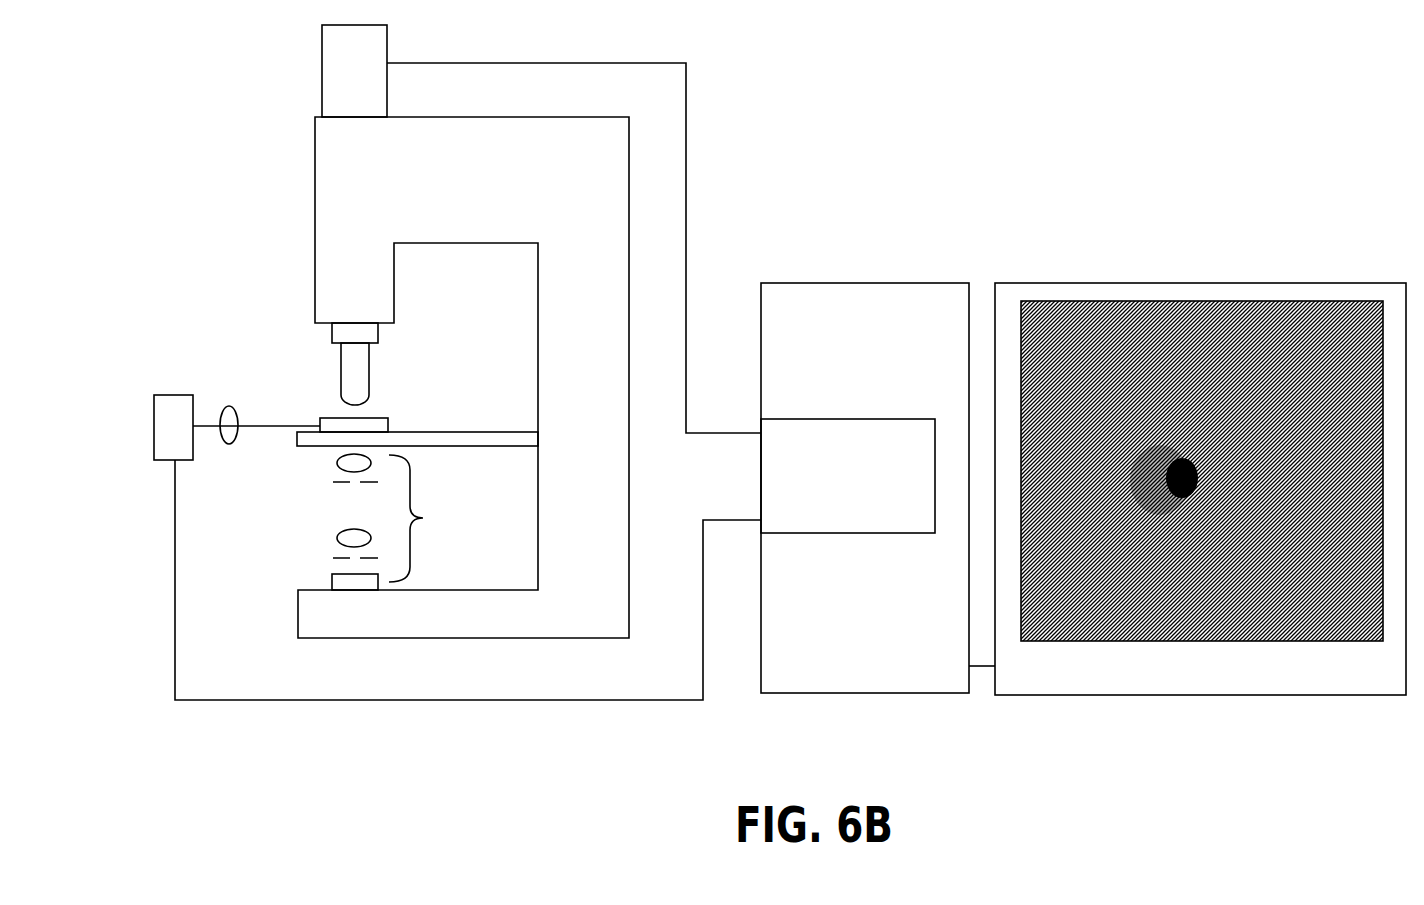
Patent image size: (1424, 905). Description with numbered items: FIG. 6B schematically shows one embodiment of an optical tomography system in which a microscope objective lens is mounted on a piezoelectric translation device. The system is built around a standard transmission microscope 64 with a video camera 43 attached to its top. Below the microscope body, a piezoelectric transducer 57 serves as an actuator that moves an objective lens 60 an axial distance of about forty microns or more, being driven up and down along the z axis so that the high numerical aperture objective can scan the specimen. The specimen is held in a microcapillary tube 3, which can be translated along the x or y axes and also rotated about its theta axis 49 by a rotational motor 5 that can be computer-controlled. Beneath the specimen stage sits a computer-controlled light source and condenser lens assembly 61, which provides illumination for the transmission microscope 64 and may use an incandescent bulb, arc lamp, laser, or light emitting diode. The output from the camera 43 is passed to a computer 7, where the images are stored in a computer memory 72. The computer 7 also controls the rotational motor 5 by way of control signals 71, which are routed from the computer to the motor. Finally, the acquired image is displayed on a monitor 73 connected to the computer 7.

The video camera 43 is at (322, 68).
The transmission microscope 64 is at (601, 275).
The piezoelectric transducer 57 is at (318, 335).
The objective lens 60 is at (341, 360).
The microcapillary tube 3 is at (392, 428).
The rotational motor 5 is at (154, 423).
The theta axis 49 is at (229, 445).
The condenser lens assembly 61 is at (423, 518).
The control signals 71 is at (224, 700).
The computer 7 is at (871, 368).
The computer memory 72 is at (868, 494).
The monitor 73 is at (1221, 681).